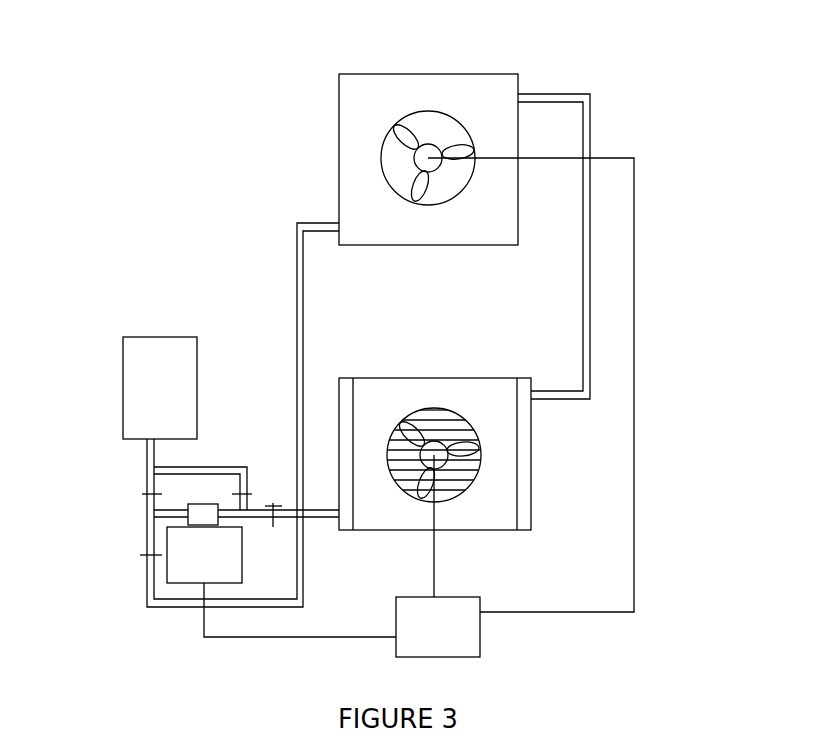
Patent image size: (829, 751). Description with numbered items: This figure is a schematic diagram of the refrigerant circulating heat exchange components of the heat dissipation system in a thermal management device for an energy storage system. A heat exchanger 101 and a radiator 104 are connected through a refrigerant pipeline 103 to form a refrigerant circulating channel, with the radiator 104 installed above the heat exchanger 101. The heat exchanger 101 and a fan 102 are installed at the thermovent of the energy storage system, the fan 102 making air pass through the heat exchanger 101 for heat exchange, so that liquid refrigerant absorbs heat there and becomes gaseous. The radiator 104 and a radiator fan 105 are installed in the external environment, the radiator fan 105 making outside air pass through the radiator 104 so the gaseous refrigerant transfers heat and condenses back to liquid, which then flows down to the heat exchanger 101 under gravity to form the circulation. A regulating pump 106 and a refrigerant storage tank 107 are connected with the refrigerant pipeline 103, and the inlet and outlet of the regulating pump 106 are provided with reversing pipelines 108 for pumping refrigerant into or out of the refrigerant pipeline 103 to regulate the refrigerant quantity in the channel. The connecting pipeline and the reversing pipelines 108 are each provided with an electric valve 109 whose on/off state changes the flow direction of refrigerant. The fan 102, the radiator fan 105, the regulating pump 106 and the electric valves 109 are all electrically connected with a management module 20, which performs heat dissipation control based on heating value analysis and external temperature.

The management module 20 is at (457, 630).
The heat exchanger 101 is at (492, 502).
The fan 102 is at (447, 449).
The refrigerant pipeline 103 is at (303, 360).
The radiator 104 is at (453, 97).
The radiator fan 105 is at (420, 157).
The regulating pump 106 is at (190, 560).
The refrigerant storage tank 107 is at (160, 377).
The reversing pipelines 108 is at (272, 600).
The electric valve 109 is at (235, 494).